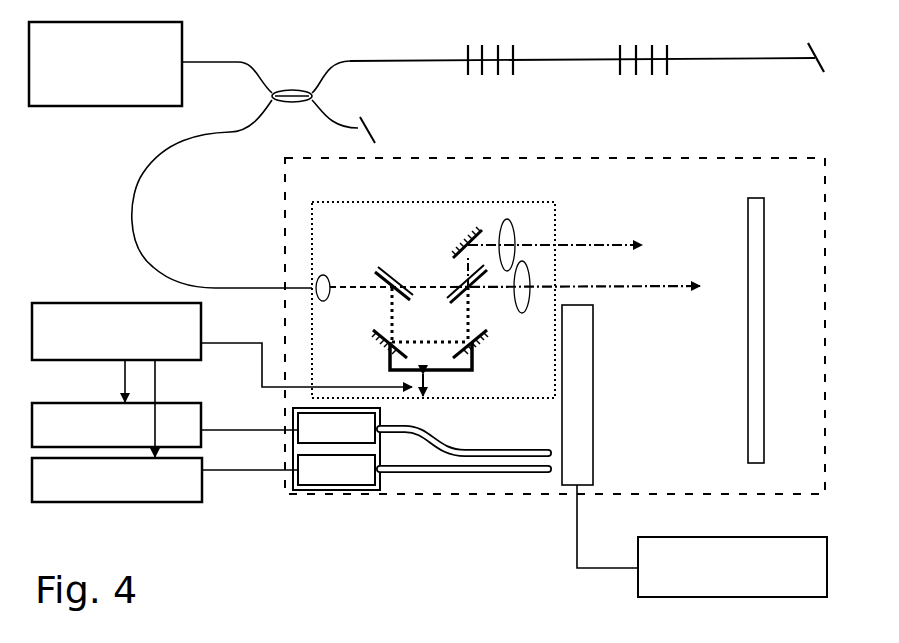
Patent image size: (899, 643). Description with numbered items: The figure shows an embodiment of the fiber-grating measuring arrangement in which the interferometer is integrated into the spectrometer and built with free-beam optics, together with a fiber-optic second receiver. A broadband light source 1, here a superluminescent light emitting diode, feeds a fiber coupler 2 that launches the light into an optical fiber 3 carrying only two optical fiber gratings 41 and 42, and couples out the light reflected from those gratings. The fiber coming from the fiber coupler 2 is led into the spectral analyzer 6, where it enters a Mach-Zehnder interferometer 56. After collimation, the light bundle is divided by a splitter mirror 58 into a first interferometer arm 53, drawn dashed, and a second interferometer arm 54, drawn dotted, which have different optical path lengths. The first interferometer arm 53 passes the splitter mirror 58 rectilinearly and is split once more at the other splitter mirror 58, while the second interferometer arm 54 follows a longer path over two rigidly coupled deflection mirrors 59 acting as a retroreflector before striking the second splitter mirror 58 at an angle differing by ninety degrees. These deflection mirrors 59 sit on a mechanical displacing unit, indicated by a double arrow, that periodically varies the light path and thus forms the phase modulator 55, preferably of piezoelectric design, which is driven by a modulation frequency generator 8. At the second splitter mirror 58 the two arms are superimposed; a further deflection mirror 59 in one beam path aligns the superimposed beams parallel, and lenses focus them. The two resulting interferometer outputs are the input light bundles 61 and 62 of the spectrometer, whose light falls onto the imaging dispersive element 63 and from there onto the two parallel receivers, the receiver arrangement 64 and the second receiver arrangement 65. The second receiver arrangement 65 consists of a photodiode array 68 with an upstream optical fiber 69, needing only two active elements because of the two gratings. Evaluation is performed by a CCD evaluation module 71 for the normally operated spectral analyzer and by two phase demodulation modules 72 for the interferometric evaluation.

The broadband light source 1 is at (183, 43).
The fiber coupler 2 is at (295, 88).
The optical fiber 3 is at (410, 60).
The optical fiber grating 41 is at (498, 47).
The optical fiber grating 42 is at (652, 47).
The spectral analyzer 6 is at (582, 158).
The Mach-Zehnder interferometer 56 is at (468, 202).
The splitter mirror 58 is at (472, 285).
The first interferometer arm 53 is at (423, 287).
The second interferometer arm 54 is at (390, 306).
The phase modulator 55 is at (430, 378).
The deflection mirror 59 is at (476, 237).
The input light bundle 61 is at (653, 285).
The input light bundle 62 is at (608, 245).
The imaging dispersive element 63 is at (757, 320).
The receiver arrangement 64 is at (577, 442).
The second receiver arrangement 65 is at (420, 500).
The photodiode array 68 is at (357, 490).
The optical fiber 69 is at (464, 491).
The CCD evaluation module 71 is at (685, 566).
The phase demodulation module 72 is at (108, 417).
The modulation frequency generator 8 is at (107, 325).